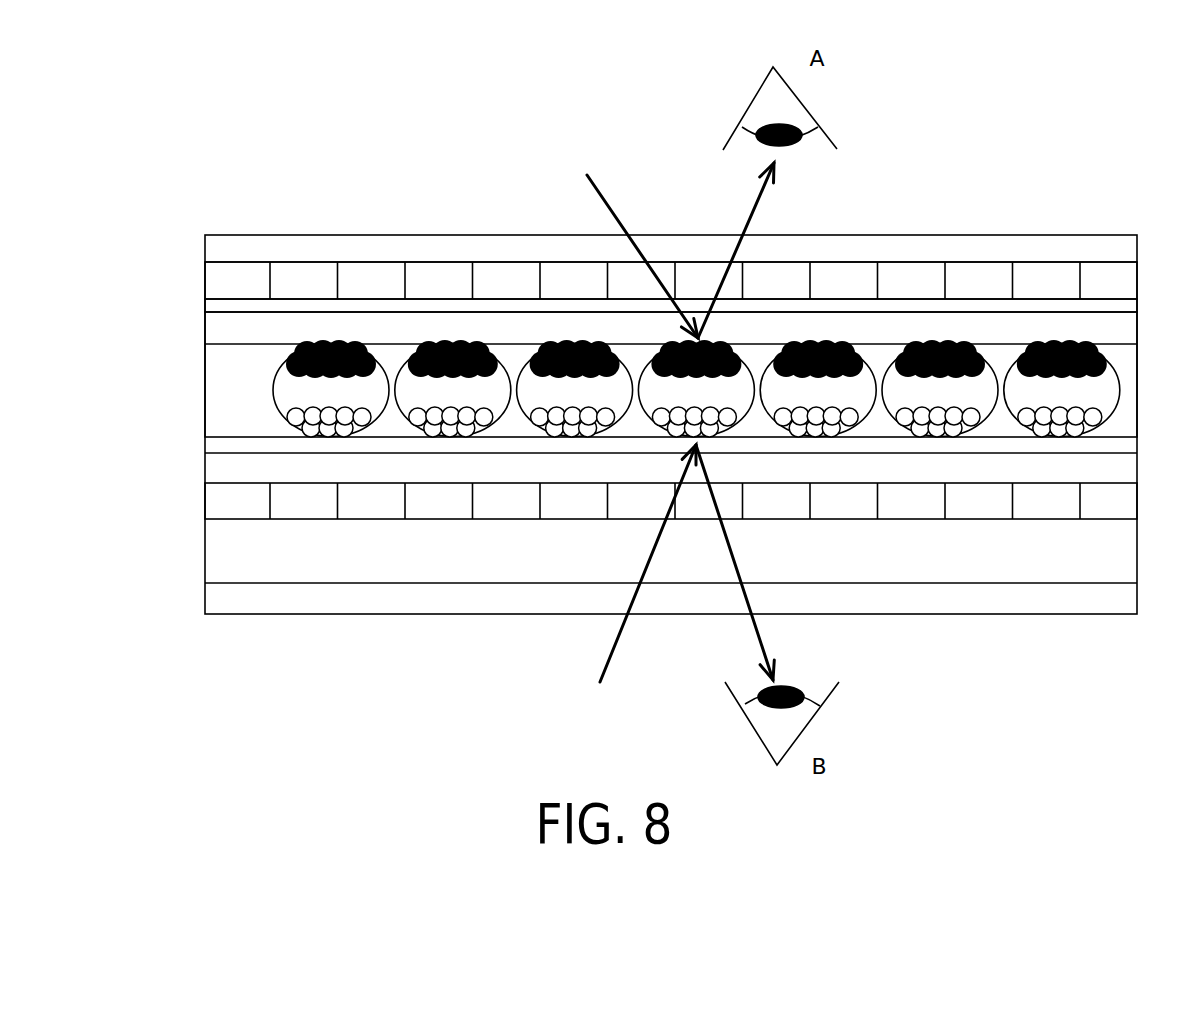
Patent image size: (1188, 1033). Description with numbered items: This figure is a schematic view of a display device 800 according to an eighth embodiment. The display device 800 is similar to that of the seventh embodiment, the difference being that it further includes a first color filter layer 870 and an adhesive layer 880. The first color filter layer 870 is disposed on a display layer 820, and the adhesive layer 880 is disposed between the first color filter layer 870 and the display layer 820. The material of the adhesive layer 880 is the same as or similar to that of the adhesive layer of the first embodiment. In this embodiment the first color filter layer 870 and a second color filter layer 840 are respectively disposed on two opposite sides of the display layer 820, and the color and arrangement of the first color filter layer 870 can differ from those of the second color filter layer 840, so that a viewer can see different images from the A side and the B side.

The display device 800 is at (1183, 711).
The first color filter layer 870 is at (213, 268).
The adhesive layer 880 is at (213, 300).
The display layer 820 is at (189, 312).
The second color filter layer 840 is at (214, 499).